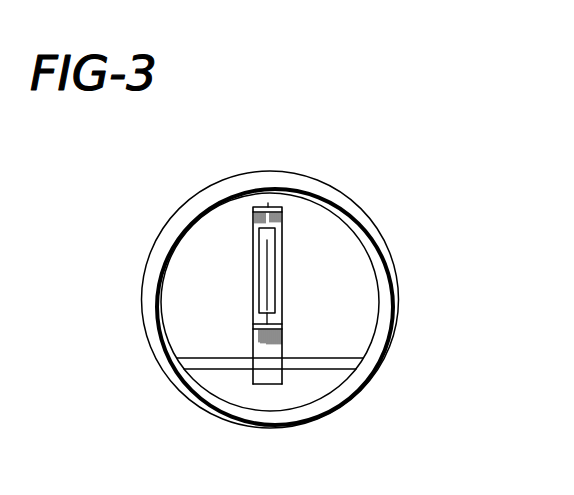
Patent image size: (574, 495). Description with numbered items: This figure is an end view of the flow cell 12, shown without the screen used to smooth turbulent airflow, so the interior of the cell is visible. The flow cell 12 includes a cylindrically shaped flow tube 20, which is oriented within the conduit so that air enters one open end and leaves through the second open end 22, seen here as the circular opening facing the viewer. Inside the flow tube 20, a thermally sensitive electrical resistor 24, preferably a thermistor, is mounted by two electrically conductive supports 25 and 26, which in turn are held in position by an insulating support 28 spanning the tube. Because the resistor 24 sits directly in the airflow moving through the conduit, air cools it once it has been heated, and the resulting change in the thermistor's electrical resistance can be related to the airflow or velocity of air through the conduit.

The flow cell 12 is at (281, 141).
The flow tube 20 is at (332, 411).
The second open end 22 is at (186, 204).
The thermally sensitive electrical resistor 24 is at (270, 275).
The electrically conductive support 25 is at (257, 347).
The electrically conductive support 26 is at (273, 205).
The insulating support 28 is at (343, 359).